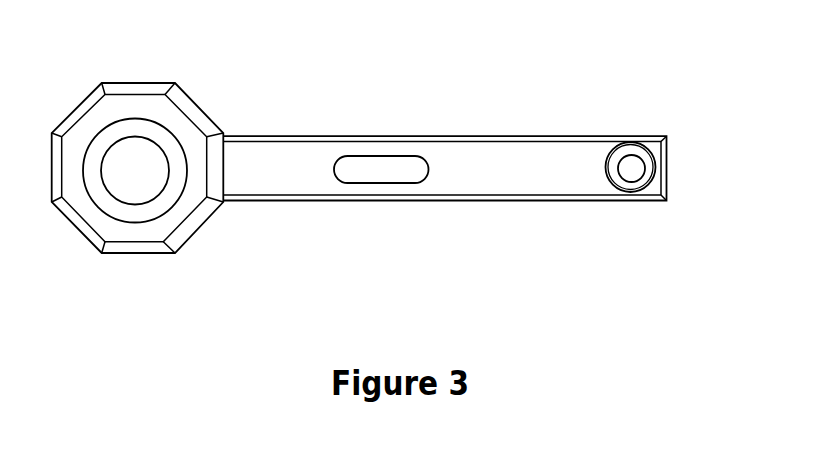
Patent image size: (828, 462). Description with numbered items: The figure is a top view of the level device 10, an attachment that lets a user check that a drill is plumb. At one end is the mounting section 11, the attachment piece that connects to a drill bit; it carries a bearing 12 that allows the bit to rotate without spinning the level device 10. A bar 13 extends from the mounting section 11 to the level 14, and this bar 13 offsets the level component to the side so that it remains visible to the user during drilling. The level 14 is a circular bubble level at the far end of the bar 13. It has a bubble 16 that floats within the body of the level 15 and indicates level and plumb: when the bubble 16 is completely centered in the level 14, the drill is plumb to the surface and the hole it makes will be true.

The level device 10 is at (392, 90).
The mounting section 11 is at (126, 240).
The bearing 12 is at (120, 164).
The bar 13 is at (468, 178).
The level 14 is at (638, 207).
The body of the level 15 is at (620, 152).
The bubble 16 is at (635, 166).